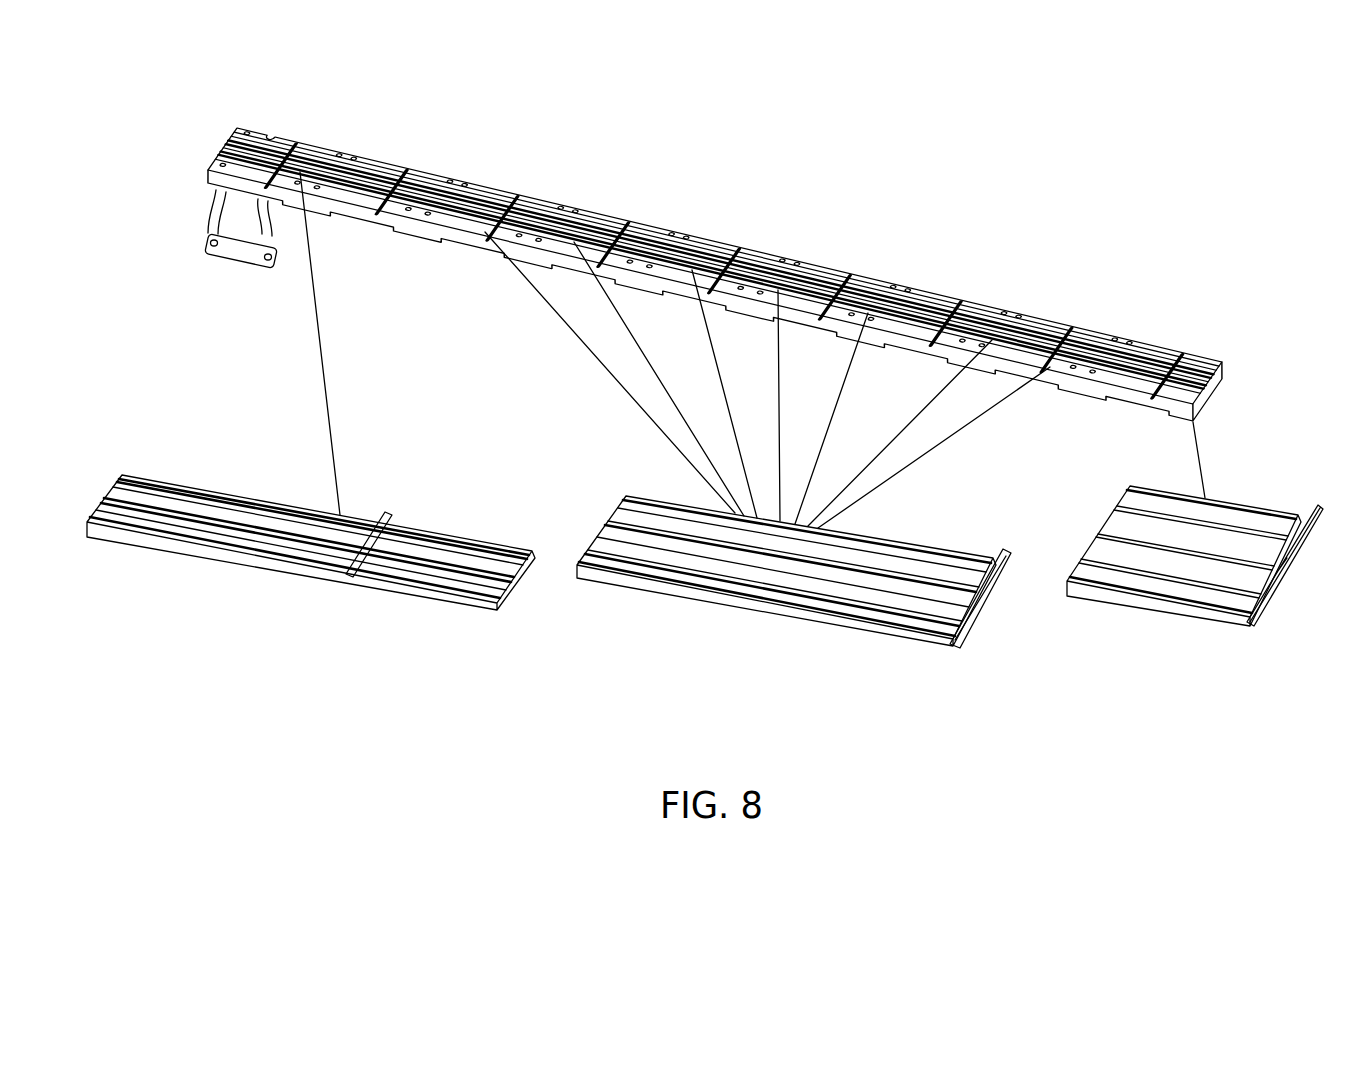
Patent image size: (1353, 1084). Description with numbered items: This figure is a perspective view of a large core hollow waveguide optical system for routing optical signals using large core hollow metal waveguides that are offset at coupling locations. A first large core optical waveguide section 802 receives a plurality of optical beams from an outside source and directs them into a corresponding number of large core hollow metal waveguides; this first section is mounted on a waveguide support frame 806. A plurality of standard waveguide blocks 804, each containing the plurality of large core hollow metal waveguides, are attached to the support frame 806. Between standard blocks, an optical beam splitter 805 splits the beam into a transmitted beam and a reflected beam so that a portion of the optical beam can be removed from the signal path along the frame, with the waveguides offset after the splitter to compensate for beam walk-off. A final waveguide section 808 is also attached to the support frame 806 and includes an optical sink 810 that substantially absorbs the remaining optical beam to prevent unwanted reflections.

The first large core optical waveguide section 802 is at (442, 524).
The standard waveguide block 804 is at (633, 583).
The optical beam splitter 805 is at (940, 638).
The waveguide support frame 806 is at (401, 163).
The final waveguide section 808 is at (1101, 594).
The optical sink 810 is at (1319, 507).